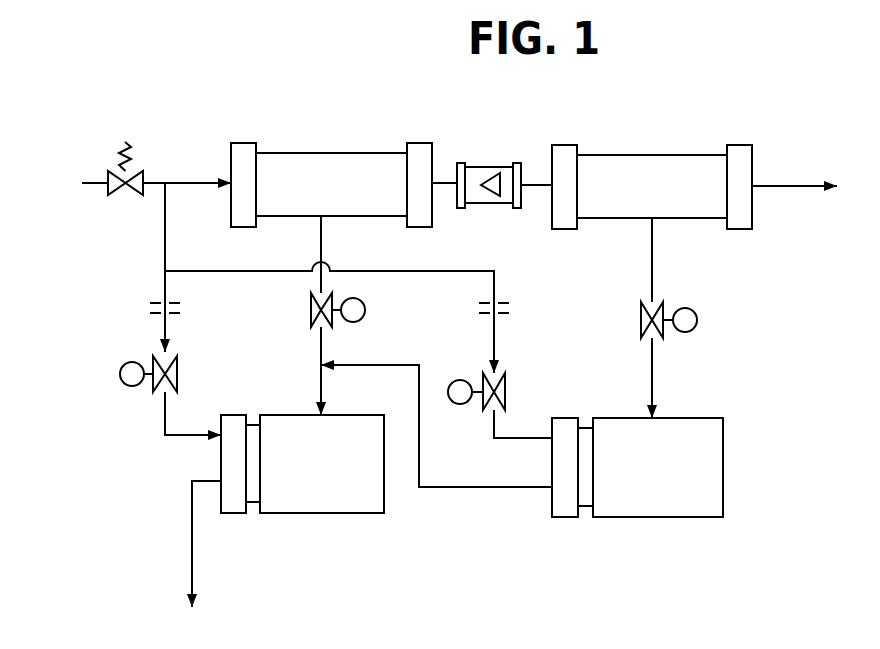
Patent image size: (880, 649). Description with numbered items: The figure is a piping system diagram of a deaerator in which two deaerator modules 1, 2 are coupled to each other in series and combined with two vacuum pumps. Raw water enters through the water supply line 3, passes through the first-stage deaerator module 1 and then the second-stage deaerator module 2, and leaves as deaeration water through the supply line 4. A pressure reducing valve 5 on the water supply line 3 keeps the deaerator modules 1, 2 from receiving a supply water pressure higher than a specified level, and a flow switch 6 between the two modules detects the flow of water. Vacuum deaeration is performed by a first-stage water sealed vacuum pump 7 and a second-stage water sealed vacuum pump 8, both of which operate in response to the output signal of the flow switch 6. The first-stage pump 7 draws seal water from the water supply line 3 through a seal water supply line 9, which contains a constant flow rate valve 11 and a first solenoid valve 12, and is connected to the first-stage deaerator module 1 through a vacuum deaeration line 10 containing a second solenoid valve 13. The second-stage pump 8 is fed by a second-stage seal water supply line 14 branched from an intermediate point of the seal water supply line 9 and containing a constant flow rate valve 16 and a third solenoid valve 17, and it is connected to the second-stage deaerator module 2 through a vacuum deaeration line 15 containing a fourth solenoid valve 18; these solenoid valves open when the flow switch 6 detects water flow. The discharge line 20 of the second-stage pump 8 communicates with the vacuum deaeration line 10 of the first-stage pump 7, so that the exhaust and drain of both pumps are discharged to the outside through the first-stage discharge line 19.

The first-stage deaerator module 1 is at (318, 152).
The second-stage deaerator module 2 is at (628, 153).
The water supply line 3 is at (88, 182).
The supply line for deaeration water 4 is at (790, 185).
The pressure reducing valve 5 is at (140, 176).
The flow switch 6 is at (487, 167).
The first-stage water sealed vacuum pump 7 is at (315, 515).
The second-stage water sealed vacuum pump 8 is at (660, 518).
The seal water supply line 9 is at (164, 235).
The vacuum deaeration line 10 is at (320, 283).
The constant flow rate valve 11 is at (148, 309).
The first solenoid valve 12 is at (120, 374).
The second solenoid valve 13 is at (365, 310).
The second-stage seal water supply line 14 is at (453, 270).
The vacuum deaeration line 15 is at (655, 262).
The constant flow rate valve 16 is at (510, 312).
The third solenoid valve 17 is at (460, 380).
The fourth solenoid valve 18 is at (697, 320).
The first-stage discharge line 19 is at (190, 542).
The discharge line 20 is at (507, 488).